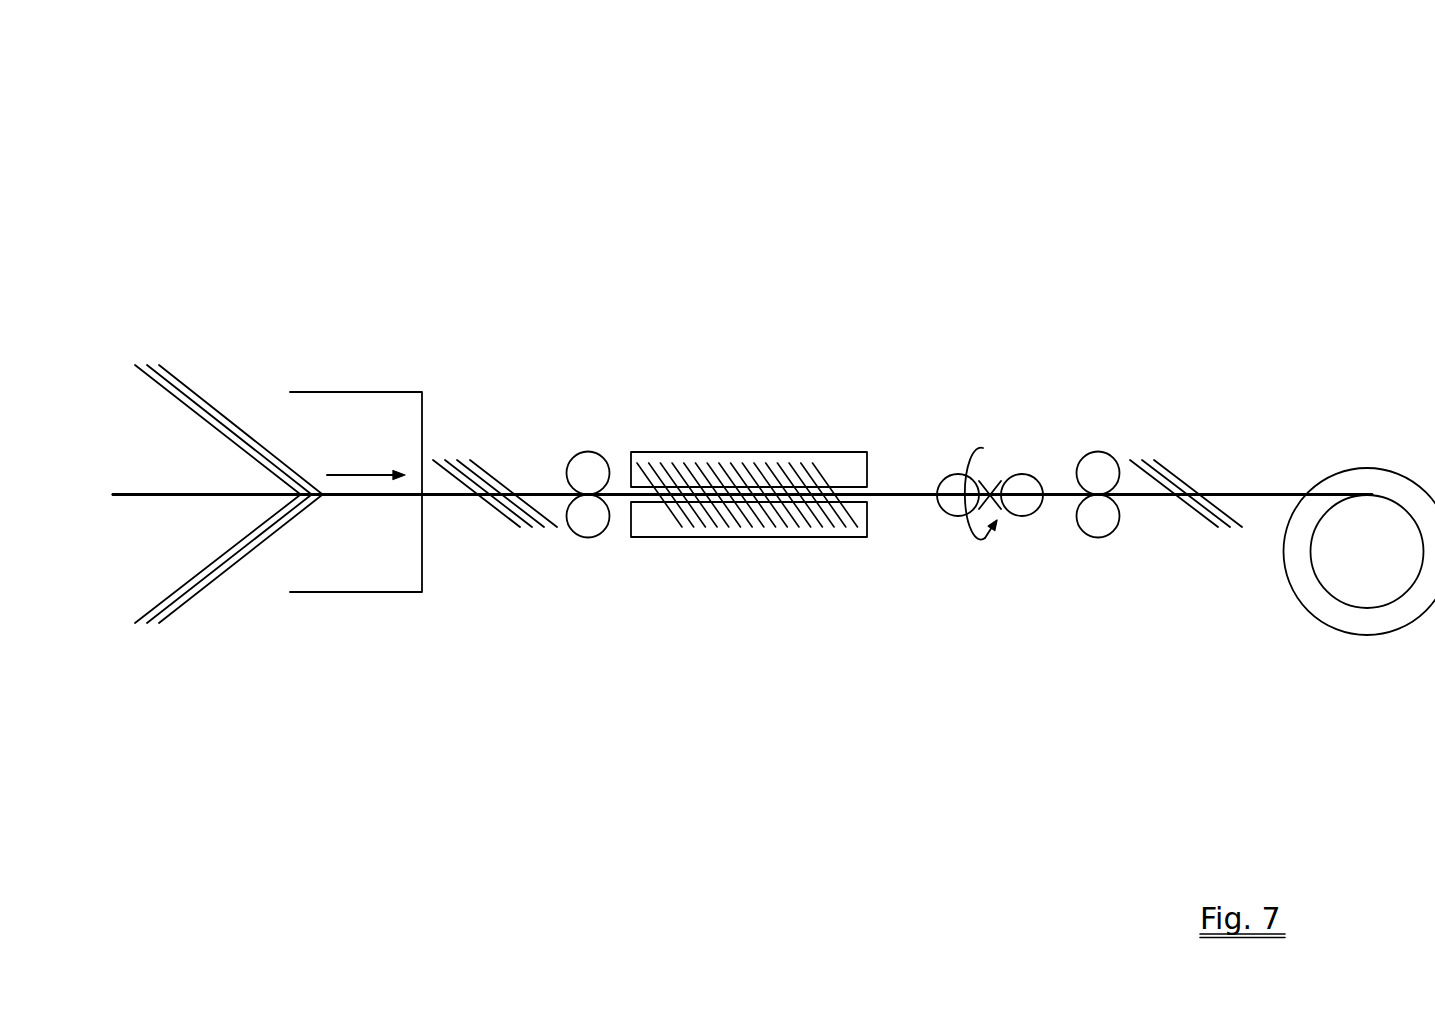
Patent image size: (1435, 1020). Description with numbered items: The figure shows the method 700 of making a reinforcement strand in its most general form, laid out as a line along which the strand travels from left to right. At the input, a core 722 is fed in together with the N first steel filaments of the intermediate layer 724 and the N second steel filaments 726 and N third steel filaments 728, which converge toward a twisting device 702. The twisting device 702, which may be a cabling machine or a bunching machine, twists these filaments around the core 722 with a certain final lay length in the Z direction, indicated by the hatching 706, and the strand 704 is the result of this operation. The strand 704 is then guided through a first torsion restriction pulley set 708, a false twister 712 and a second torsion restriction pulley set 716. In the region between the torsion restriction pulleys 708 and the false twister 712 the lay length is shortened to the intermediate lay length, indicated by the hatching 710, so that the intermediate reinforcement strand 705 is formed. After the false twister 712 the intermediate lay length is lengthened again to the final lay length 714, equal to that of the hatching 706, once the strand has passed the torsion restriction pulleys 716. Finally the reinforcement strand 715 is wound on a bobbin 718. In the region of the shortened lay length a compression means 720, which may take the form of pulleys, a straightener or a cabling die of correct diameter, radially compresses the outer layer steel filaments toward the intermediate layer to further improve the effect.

The method 700 is at (230, 180).
The twisting device 702 is at (389, 455).
The strand 704 is at (512, 604).
The intermediate reinforcement strand 705 is at (955, 605).
The hatching 706 is at (545, 532).
The first torsion restriction pulley set 708 is at (541, 462).
The hatching 710 is at (749, 553).
The false twister 712 is at (941, 473).
The final lay length 714 is at (1206, 458).
The reinforcement strand 715 is at (1230, 552).
The second torsion restriction pulley set 716 is at (1051, 466).
The bobbin 718 is at (1397, 562).
The compression means 720 is at (749, 454).
The core 722 is at (217, 603).
The intermediate layer 724 is at (228, 577).
The second steel filaments 726 is at (217, 397).
The third steel filaments 728 is at (243, 413).